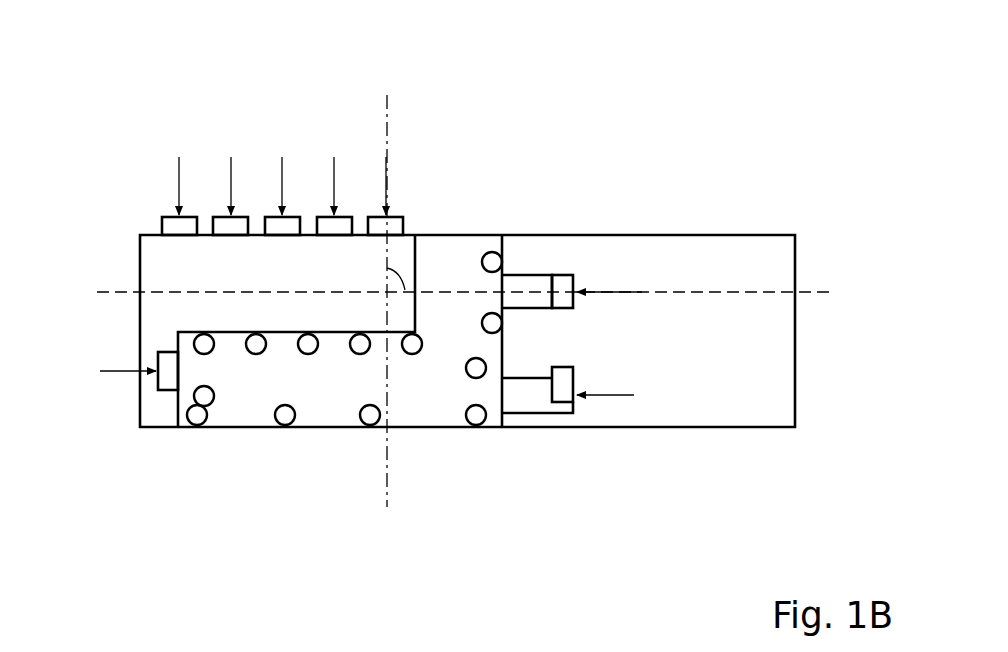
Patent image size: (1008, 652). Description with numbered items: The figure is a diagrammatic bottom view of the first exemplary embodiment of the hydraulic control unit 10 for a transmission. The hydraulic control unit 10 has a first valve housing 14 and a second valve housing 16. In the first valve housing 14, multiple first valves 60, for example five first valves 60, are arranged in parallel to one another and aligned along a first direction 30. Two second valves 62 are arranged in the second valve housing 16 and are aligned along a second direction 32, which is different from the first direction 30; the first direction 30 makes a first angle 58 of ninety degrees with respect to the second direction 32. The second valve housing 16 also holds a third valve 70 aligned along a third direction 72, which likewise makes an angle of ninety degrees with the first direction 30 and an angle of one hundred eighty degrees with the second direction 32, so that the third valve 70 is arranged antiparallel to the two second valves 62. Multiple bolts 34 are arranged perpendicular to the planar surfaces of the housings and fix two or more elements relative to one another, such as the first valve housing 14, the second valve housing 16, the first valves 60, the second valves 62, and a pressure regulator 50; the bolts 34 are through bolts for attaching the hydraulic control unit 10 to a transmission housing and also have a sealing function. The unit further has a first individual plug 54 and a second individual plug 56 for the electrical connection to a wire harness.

The hydraulic control unit 10 is at (784, 128).
The first valve housing 14 is at (730, 265).
The second valve housing 16 is at (453, 270).
The first direction 30 is at (230, 177).
The second direction 32 is at (613, 293).
The bolt 34 is at (197, 415).
The pressure regulator 50 is at (528, 393).
The first individual plug 54 is at (563, 390).
The second individual plug 56 is at (562, 285).
The first angle 58 is at (398, 279).
The first valve 60 is at (272, 225).
The second valve 62 is at (533, 283).
The third valve 70 is at (166, 377).
The third direction 72 is at (125, 371).